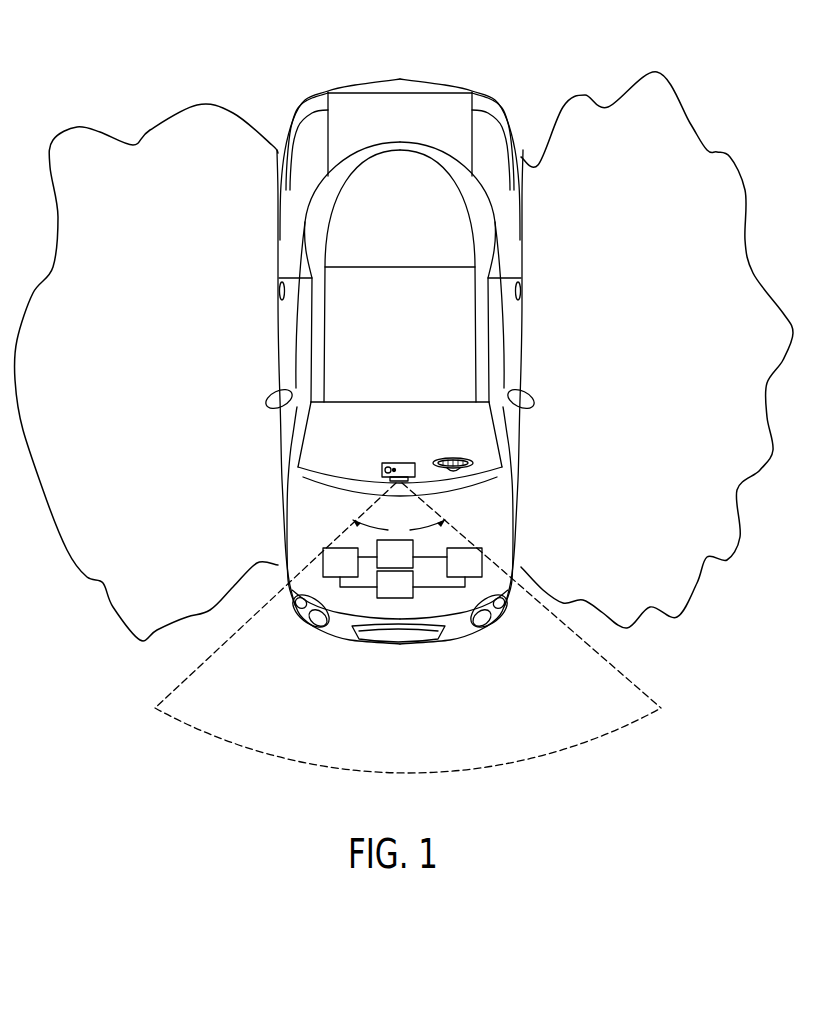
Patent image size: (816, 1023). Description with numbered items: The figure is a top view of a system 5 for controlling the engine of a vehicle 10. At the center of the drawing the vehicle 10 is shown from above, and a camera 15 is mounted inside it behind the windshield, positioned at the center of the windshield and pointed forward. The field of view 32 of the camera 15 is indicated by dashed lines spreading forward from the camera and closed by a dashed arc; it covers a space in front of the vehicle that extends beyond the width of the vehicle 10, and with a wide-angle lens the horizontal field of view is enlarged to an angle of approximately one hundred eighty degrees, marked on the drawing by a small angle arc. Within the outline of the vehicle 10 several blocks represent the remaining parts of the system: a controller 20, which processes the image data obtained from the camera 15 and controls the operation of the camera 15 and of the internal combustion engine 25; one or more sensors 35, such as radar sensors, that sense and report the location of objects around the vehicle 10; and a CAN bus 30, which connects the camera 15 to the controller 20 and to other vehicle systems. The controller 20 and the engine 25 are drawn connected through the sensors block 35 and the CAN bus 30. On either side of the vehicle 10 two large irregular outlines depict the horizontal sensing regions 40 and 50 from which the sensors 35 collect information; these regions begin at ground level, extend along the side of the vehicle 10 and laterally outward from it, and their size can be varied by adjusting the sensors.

The system 5 is at (150, 82).
The vehicle 10 is at (302, 508).
The camera 15 is at (407, 463).
The controller 20 is at (349, 571).
The internal combustion engine 25 is at (473, 571).
The CAN bus 30 is at (404, 593).
The field of view 32 is at (317, 768).
The sensors 35 is at (404, 563).
The horizontal sensing region 40 is at (609, 288).
The horizontal sensing region 50 is at (205, 329).